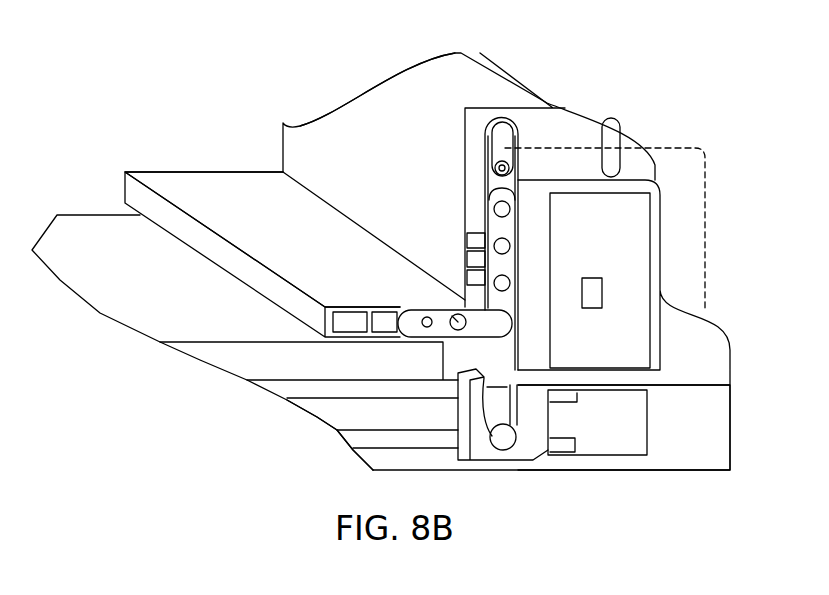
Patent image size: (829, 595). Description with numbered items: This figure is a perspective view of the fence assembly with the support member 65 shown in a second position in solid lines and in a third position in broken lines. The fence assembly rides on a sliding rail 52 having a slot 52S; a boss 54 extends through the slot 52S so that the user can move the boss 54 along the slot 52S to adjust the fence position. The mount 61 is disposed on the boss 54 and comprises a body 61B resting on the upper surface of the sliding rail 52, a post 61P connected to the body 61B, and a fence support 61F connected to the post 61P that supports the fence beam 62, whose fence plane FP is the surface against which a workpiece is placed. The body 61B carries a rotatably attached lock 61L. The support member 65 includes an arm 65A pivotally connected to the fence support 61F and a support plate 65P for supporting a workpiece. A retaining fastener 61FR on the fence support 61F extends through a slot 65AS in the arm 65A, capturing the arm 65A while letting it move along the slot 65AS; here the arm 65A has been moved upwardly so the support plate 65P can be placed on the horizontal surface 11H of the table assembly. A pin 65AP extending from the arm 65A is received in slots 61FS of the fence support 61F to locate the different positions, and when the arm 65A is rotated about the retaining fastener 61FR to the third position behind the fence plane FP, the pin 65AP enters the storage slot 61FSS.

The horizontal surface 11H is at (87, 227).
The support member 65 is at (194, 237).
The support plate 65P is at (218, 192).
The fence plane FP is at (405, 85).
The fence beam 62 is at (493, 80).
The slot 65AS is at (502, 135).
The fence support 61F is at (575, 130).
The storage slot 61FSS is at (608, 138).
The retaining fastener 61FR is at (497, 168).
The slots 61FS is at (470, 272).
The arm 65A is at (415, 309).
The pin 65AP is at (505, 246).
The post 61P is at (652, 256).
The mount 61 is at (628, 336).
The sliding rail 52 is at (327, 412).
The slot 52S is at (360, 442).
The boss 54 is at (503, 443).
The body 61B is at (685, 457).
The lock 61L is at (608, 440).